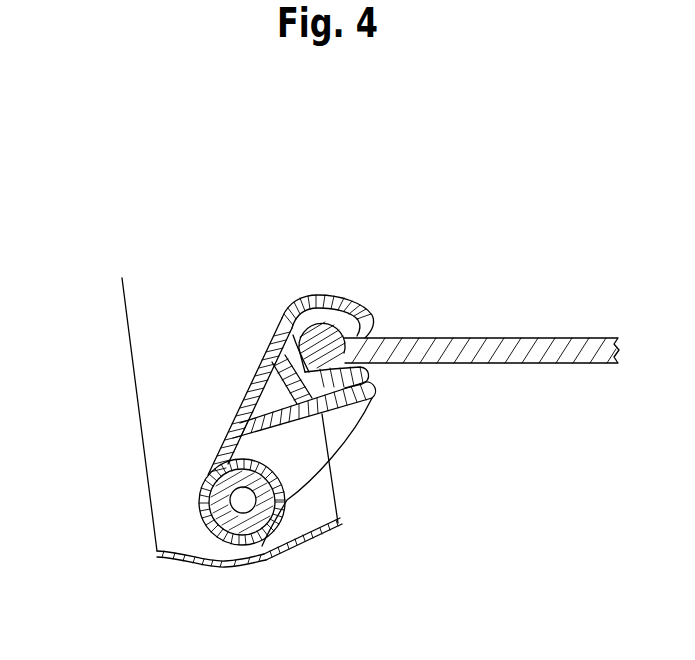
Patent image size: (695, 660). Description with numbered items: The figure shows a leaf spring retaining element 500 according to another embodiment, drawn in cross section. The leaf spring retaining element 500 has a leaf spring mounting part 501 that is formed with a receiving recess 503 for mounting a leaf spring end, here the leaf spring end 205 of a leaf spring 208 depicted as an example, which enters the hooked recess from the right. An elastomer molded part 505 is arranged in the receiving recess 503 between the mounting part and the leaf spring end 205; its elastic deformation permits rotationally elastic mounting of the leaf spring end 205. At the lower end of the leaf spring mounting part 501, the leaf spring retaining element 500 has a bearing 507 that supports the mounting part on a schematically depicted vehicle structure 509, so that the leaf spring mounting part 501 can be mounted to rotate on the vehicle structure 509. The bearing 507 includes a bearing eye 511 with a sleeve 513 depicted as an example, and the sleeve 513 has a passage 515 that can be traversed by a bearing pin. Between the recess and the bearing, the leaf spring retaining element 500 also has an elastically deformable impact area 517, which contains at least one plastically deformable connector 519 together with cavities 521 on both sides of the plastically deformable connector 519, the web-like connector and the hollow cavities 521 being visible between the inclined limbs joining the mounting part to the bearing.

The leaf spring retaining element 500 is at (321, 263).
The leaf spring mounting part 501 is at (285, 308).
The receiving recess 503 is at (340, 296).
The elastomer molded part 505 is at (347, 322).
The bearing 507 is at (285, 535).
The vehicle structure 509 is at (165, 535).
The bearing eye 511 is at (231, 546).
The sleeve 513 is at (278, 504).
The passage 515 is at (205, 497).
The elastically deformable impact area 517 is at (262, 403).
The plastically deformable connector 519 is at (335, 437).
The cavities 521 is at (284, 384).
The leaf spring end 205 is at (368, 366).
The leaf spring 208 is at (572, 348).